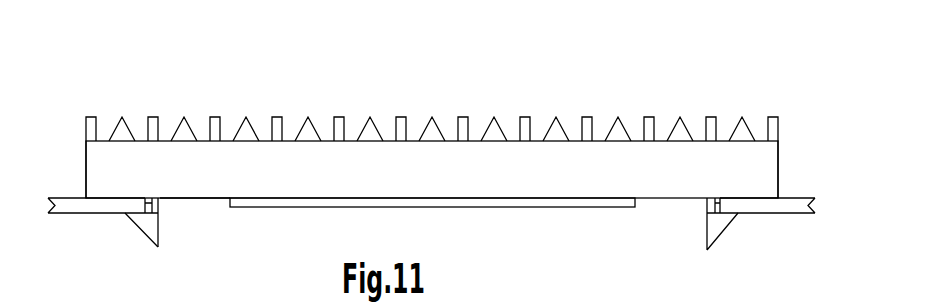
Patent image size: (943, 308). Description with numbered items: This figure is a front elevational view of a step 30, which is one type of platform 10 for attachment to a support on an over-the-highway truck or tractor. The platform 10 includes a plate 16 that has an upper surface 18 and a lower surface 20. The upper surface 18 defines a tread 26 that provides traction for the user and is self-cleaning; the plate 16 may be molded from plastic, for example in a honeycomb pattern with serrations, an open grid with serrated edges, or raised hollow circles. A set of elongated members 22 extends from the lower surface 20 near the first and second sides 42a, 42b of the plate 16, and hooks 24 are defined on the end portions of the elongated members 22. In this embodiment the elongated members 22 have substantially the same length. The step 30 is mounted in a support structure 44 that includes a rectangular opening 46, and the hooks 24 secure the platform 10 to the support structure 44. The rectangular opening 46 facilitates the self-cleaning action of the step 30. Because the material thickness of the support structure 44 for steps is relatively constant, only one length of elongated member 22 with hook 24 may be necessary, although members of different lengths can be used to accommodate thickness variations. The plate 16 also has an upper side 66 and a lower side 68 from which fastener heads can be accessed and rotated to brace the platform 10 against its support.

The platform 10 is at (414, 68).
The plate 16 is at (163, 152).
The upper surface 18 is at (267, 138).
The lower surface 20 is at (202, 199).
The elongated members 22 is at (712, 206).
The hooks 24 is at (142, 218).
The tread 26 is at (587, 125).
The step 30 is at (313, 70).
The first side 42a is at (86, 158).
The second side 42b is at (778, 160).
The support structure 44 is at (60, 213).
The rectangular opening 46 is at (160, 199).
The upper side 66 is at (682, 75).
The lower side 68 is at (483, 256).